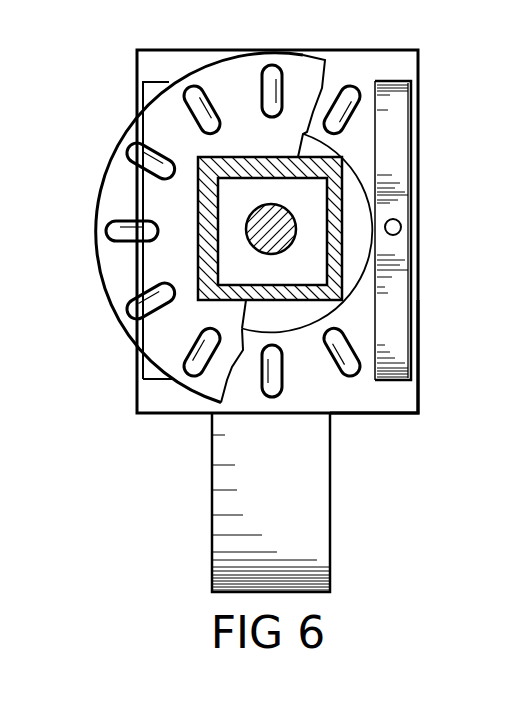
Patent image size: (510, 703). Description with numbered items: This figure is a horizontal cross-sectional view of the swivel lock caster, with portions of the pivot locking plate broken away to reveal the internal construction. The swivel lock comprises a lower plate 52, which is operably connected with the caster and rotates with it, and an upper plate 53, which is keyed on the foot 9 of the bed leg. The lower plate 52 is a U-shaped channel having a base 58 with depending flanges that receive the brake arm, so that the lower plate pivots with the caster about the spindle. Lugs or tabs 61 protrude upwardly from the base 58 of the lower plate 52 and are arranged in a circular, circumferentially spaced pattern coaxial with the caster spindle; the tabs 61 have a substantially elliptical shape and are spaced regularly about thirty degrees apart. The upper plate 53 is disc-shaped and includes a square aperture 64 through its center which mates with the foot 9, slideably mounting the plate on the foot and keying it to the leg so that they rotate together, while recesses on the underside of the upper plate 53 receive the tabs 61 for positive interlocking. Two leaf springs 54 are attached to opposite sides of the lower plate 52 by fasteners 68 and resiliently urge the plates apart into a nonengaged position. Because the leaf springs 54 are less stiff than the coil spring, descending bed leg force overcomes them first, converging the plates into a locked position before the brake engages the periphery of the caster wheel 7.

The lower plate 52 is at (362, 60).
The upper plate 53 is at (100, 228).
The leaf spring 54 is at (395, 183).
The base 58 is at (367, 395).
The tabs 61 is at (358, 88).
The square aperture 64 is at (246, 167).
The fasteners 68 is at (401, 226).
The foot 9 is at (337, 267).
The caster wheel 7 is at (237, 508).